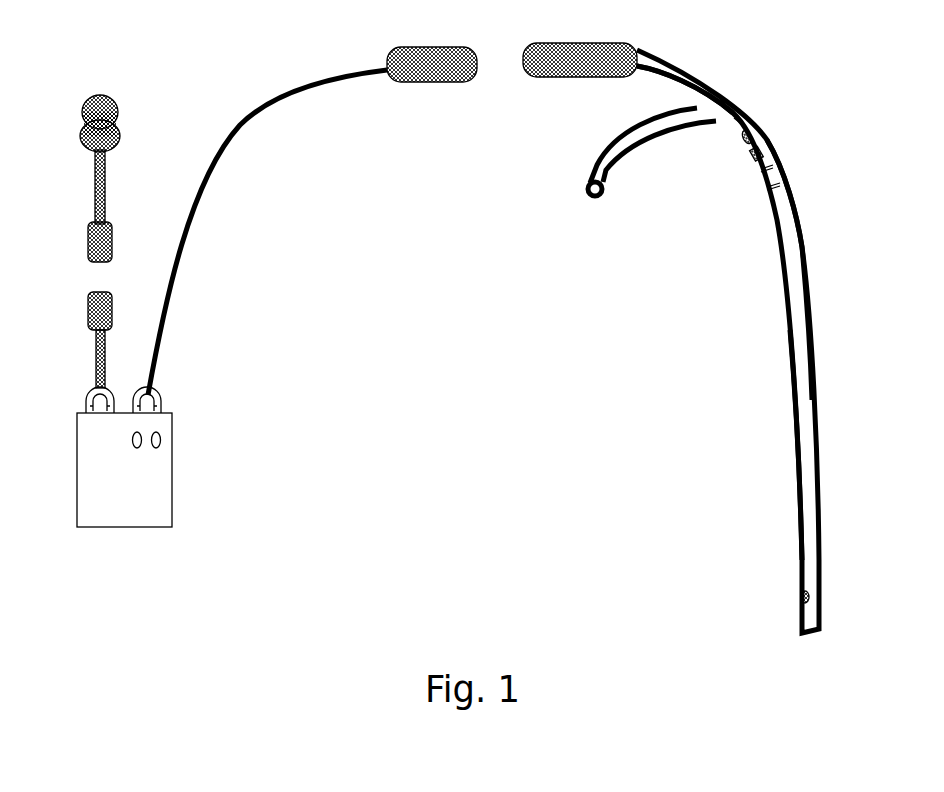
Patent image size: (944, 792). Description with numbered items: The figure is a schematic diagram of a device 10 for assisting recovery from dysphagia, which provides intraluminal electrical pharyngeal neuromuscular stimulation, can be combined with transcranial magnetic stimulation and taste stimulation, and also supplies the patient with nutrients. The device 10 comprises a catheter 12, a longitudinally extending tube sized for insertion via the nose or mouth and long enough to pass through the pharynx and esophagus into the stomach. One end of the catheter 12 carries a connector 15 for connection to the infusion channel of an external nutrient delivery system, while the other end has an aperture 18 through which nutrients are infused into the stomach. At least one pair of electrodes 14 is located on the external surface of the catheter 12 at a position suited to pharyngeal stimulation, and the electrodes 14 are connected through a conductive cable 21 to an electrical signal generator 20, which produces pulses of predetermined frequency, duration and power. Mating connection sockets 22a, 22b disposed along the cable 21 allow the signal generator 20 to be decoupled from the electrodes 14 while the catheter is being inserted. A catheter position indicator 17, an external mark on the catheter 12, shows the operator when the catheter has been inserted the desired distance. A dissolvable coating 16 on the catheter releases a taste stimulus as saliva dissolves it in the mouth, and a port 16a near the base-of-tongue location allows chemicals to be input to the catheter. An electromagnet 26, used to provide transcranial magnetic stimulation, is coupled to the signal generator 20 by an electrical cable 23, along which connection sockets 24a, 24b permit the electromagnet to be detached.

The device 10 is at (708, 86).
The catheter 12 is at (815, 380).
The electrodes 14 is at (800, 192).
The connector 15 is at (600, 176).
The dissolvable coating 16 is at (770, 156).
The port 16a is at (745, 146).
The catheter position indicator 17 is at (726, 128).
The aperture 18 is at (800, 596).
The electrical signal generator 20 is at (90, 448).
The conductive cable 21 is at (256, 114).
The connection socket 22a is at (420, 83).
The connection socket 22b is at (575, 78).
The electrical cable 23 is at (105, 206).
The connection socket 24a is at (88, 312).
The connection socket 24b is at (88, 243).
The electromagnet 26 is at (102, 95).